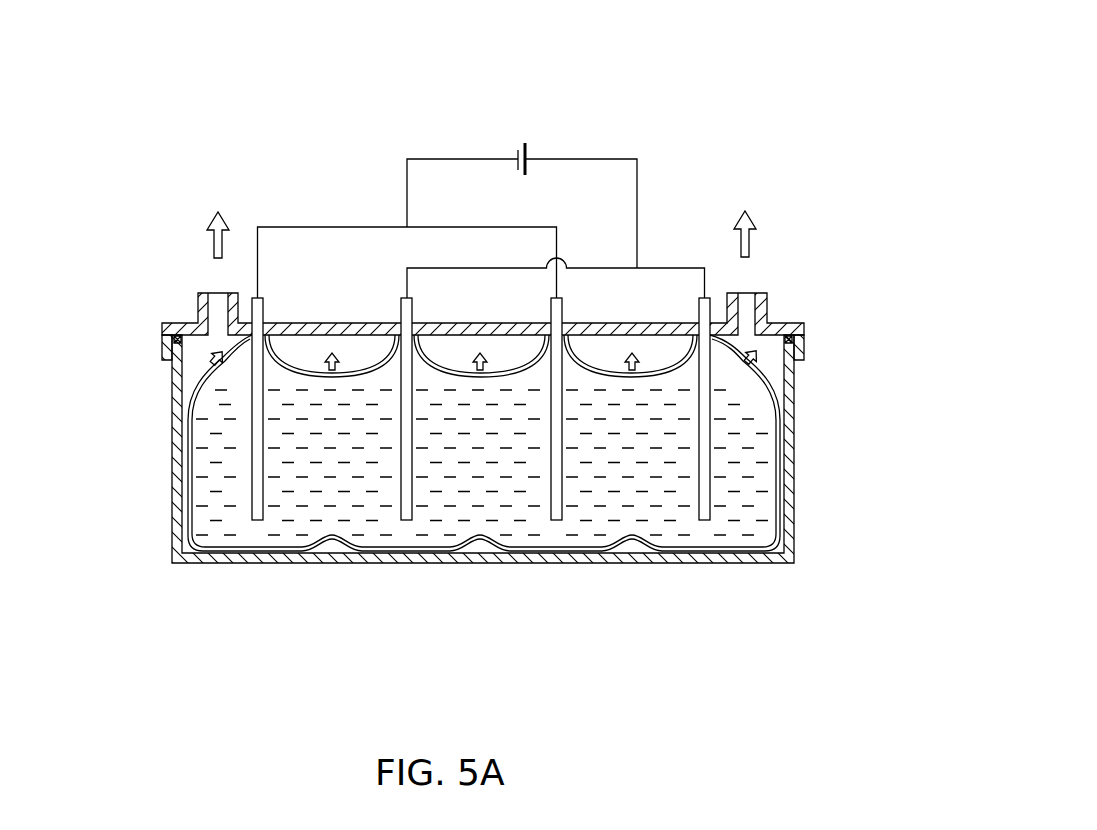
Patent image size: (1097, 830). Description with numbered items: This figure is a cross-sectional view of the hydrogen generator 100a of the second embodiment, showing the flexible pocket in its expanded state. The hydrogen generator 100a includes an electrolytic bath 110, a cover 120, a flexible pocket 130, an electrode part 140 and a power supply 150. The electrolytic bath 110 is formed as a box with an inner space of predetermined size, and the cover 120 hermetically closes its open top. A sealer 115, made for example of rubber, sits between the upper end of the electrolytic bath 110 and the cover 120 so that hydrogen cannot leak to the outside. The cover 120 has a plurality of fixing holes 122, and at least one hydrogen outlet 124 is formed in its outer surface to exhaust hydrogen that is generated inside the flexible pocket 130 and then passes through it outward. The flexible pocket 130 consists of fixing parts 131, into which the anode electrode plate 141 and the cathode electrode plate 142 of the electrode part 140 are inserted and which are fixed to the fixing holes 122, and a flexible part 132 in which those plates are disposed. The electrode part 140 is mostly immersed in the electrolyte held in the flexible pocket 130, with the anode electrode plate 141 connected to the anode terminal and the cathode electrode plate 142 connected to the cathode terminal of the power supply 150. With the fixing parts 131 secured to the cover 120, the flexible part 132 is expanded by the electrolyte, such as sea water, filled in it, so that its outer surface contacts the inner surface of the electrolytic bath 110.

The hydrogen generator 100a is at (743, 97).
The electrolytic bath 110 is at (790, 490).
The sealer 115 is at (804, 342).
The cover 120 is at (783, 323).
The fixing holes 122 is at (398, 323).
The hydrogen outlet 124 is at (767, 299).
The flexible pocket 130 is at (106, 406).
The fixing parts 131 is at (220, 362).
The flexible part 132 is at (186, 472).
The electrode part 140 is at (563, 632).
The anode electrode plate 141 is at (705, 518).
The cathode electrode plate 142 is at (261, 512).
The power supply 150 is at (540, 143).